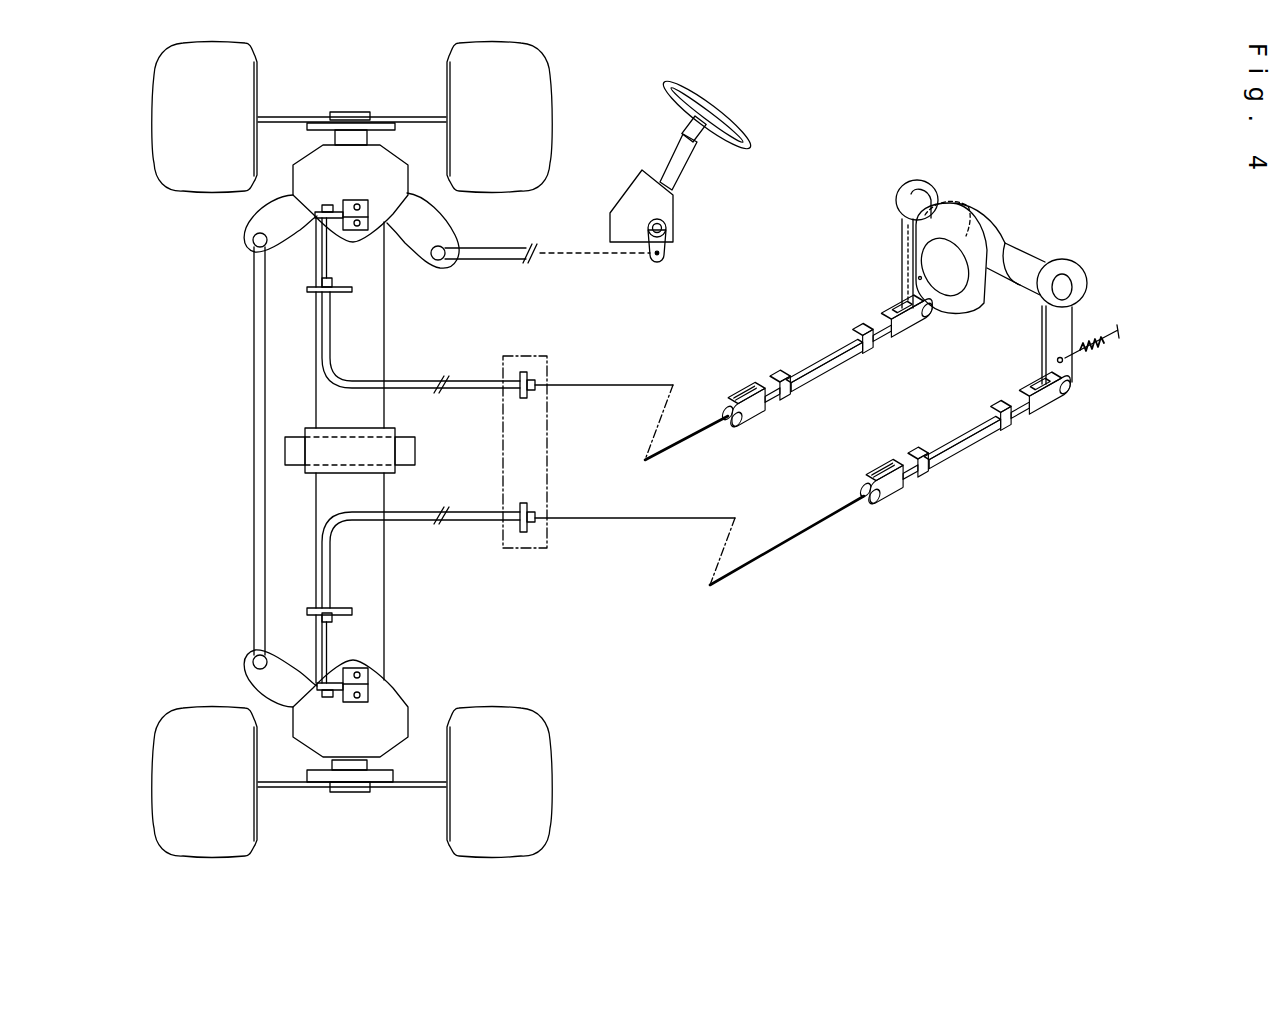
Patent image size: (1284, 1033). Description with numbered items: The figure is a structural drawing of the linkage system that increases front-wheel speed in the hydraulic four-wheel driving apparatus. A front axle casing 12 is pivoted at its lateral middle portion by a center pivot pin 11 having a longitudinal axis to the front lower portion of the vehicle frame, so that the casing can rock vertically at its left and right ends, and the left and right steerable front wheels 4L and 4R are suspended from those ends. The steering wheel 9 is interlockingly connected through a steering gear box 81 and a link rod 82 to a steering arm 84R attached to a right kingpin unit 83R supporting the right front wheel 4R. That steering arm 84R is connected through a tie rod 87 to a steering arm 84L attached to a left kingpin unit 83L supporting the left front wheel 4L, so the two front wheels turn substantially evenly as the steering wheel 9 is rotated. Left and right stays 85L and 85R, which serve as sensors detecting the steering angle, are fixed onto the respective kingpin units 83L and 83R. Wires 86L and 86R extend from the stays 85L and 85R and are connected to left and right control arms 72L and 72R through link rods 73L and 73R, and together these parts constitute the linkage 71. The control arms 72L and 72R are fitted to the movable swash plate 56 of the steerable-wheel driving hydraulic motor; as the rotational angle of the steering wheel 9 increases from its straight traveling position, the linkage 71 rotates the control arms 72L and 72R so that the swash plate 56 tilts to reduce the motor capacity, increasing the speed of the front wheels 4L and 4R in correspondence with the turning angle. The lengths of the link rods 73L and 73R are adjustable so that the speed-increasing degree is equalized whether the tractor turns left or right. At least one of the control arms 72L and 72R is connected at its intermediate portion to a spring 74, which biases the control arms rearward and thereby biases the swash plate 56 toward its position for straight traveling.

The right steerable front wheel 4R is at (552, 93).
The left steerable front wheel 4L is at (548, 788).
The steering wheel 9 is at (735, 127).
The steering gear box 81 is at (618, 202).
The link rod 82 is at (487, 262).
The right kingpin unit 83R is at (237, 217).
The left kingpin unit 83L is at (223, 684).
The right steering arm 84R is at (290, 252).
The left steering arm 84L is at (292, 640).
The right stay 85R is at (342, 206).
The left stay 85L is at (342, 702).
The right wire 86R is at (600, 384).
The left wire 86L is at (767, 552).
The tie rod 87 is at (252, 436).
The center pivot pin 11 is at (417, 447).
The front axle casing 12 is at (386, 562).
The movable swash plate 56 is at (988, 222).
The linkage 71 is at (657, 640).
The right control arm 72R is at (905, 268).
The left control arm 72L is at (1040, 340).
The right link rod 73R is at (770, 384).
The left link rod 73L is at (918, 474).
The spring 74 is at (1090, 352).